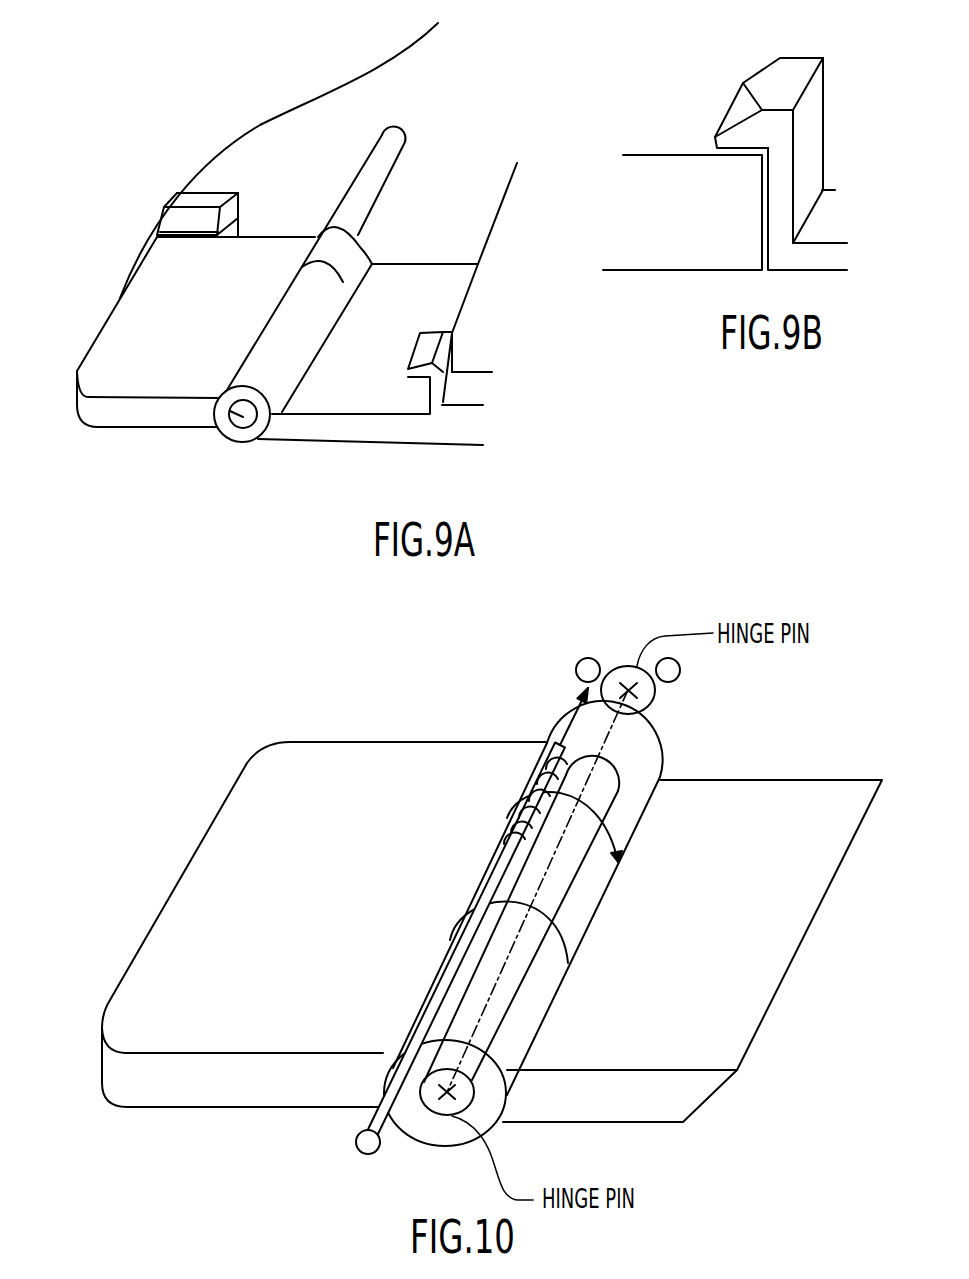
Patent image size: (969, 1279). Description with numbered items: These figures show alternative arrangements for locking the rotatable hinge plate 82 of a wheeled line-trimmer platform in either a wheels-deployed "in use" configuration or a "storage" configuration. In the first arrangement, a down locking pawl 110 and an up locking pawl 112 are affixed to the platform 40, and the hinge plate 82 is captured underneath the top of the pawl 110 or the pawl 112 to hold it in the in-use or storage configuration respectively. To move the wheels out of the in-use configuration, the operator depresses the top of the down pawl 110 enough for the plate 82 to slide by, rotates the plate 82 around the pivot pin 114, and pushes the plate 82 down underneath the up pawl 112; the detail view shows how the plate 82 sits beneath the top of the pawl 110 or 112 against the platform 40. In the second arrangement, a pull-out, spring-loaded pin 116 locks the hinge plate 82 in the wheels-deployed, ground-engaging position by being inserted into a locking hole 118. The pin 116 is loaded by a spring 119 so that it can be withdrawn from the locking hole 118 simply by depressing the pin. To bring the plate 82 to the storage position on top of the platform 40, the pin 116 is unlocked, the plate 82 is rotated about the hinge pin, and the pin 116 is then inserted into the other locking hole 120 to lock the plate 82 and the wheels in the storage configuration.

In FIG. 9A, the platform 40 is at (278, 143).
In FIG. 9B, the platform 40 is at (833, 258).
In FIG. 10, the platform 40 is at (744, 1044).
In FIG. 9A, the rotatable hinge plate 82 is at (135, 323).
In FIG. 9B, the rotatable hinge plate 82 is at (667, 202).
In FIG. 10, the rotatable hinge plate 82 is at (127, 990).
In FIG. 9A, the down locking pawl 110 is at (176, 197).
In FIG. 9B, the down locking pawl 110 is at (797, 62).
In FIG. 9A, the up locking pawl 112 is at (452, 333).
In FIG. 9B, the up locking pawl 112 is at (805, 140).
In FIG. 9A, the pivot pin 114 is at (228, 427).
In FIG. 10, the pin 116 is at (355, 1150).
In FIG. 10, the locking hole 118 is at (577, 668).
In FIG. 10, the spring 119 is at (547, 742).
In FIG. 10, the locking hole 120 is at (680, 671).